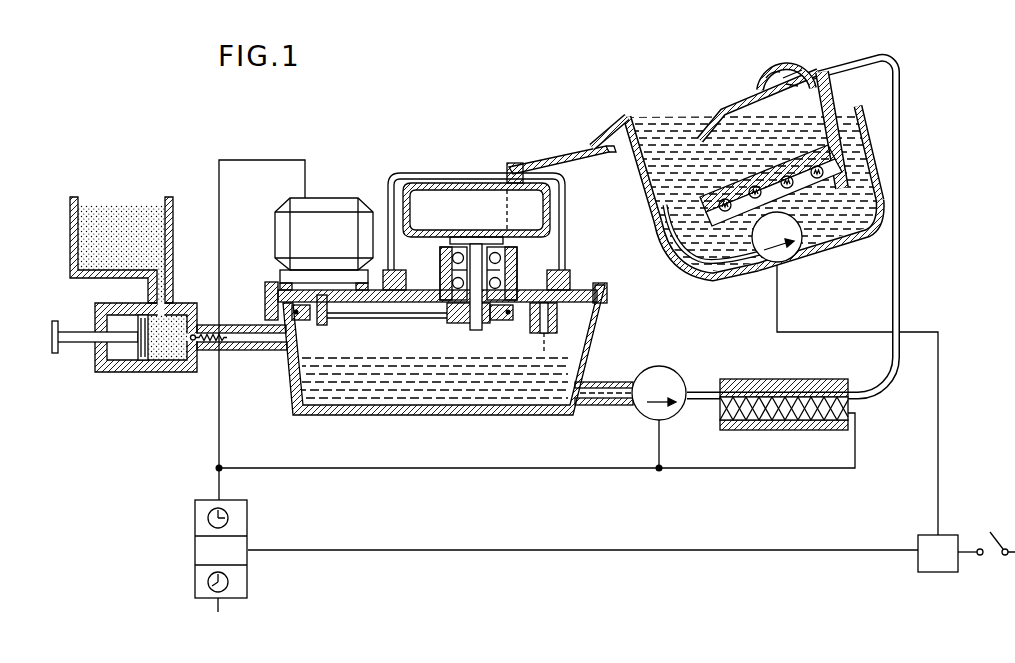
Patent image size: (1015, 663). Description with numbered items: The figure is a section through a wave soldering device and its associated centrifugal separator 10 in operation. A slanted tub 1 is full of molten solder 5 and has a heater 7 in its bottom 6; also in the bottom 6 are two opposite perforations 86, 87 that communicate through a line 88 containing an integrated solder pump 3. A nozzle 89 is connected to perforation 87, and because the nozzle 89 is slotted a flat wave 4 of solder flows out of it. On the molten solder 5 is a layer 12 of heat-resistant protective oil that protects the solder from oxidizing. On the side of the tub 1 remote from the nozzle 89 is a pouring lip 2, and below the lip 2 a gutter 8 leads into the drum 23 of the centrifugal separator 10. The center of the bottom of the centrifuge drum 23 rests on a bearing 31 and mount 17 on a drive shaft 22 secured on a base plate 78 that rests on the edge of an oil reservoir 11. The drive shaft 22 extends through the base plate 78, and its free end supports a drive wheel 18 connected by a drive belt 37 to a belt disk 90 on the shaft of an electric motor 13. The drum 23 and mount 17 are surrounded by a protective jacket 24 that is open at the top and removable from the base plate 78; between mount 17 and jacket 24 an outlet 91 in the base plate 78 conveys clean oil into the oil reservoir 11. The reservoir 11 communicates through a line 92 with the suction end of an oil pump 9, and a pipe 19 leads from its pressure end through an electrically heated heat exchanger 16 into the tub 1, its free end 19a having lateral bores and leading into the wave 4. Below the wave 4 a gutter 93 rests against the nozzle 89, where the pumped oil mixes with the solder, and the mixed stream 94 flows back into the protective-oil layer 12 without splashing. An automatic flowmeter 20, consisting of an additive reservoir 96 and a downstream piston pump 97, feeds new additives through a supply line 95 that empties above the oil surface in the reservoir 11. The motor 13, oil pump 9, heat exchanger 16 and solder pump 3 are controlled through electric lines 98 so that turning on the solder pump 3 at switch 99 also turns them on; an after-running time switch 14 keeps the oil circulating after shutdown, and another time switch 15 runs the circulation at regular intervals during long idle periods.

The tub 1 is at (648, 193).
The pouring lip 2 is at (620, 117).
The solder pump 3 is at (794, 259).
The wave 4 is at (790, 62).
The molten solder 5 is at (655, 173).
The bottom 6 is at (695, 267).
The heater 7 is at (847, 217).
The gutter 8 is at (551, 148).
The oil pump 9 is at (670, 410).
The centrifugal separator 10 is at (468, 143).
The oil reservoir 11 is at (475, 417).
The protective-oil layer 12 is at (647, 114).
The electric motor 13 is at (330, 217).
The after-running time switch 14 is at (196, 519).
The time switch 15 is at (196, 585).
The heat exchanger 16 is at (805, 422).
The mount 17 is at (517, 268).
The drive wheel 18 is at (490, 323).
The pipe 19 is at (900, 263).
The free end 19a is at (788, 70).
The automatic flowmeter 20 is at (125, 362).
The drive shaft 22 is at (477, 325).
The centrifuge drum 23 is at (447, 197).
The protective jacket 24 is at (390, 192).
The bearing 31 is at (442, 277).
The drive belt 37 is at (403, 313).
The base plate 78 is at (583, 288).
The perforation 86 is at (680, 227).
The perforation 87 is at (878, 170).
The line 88 is at (738, 258).
The nozzle 89 is at (832, 82).
The belt disk 90 is at (338, 320).
The outlet 91 is at (552, 318).
The line 92 is at (607, 407).
The gutter 93 is at (767, 75).
The mixed stream 94 is at (723, 100).
The supply line 95 is at (256, 350).
The additive reservoir 96 is at (115, 213).
The piston pump 97 is at (140, 352).
The electric lines 98 is at (937, 493).
The switch 99 is at (991, 531).